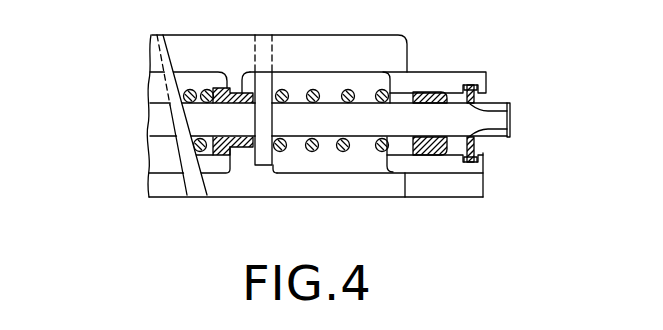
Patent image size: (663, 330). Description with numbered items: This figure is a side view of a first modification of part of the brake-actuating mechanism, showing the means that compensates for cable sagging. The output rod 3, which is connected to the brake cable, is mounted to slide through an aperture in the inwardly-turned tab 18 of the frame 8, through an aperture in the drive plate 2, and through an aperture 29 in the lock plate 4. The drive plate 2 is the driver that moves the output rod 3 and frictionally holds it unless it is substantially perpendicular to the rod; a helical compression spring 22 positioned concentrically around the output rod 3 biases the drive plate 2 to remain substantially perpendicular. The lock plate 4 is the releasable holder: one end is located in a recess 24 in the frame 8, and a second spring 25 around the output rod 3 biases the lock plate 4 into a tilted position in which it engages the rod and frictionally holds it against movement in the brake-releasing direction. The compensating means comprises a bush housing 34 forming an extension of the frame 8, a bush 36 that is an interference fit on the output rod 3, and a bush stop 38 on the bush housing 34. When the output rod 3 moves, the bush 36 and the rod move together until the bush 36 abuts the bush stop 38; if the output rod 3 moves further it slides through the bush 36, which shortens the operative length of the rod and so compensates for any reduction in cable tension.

The drive plate 2 is at (263, 166).
The output rod 3 is at (498, 133).
The lock plate 4 is at (164, 88).
The frame 8 is at (399, 47).
The inwardly-turned tab 18 is at (234, 157).
The helical compression spring 22 is at (316, 150).
The recess 24 is at (183, 190).
The second spring 25 is at (176, 153).
The aperture 29 is at (150, 117).
The bush housing 34 is at (450, 163).
The bush 36 is at (430, 158).
The bush stop 38 is at (514, 123).